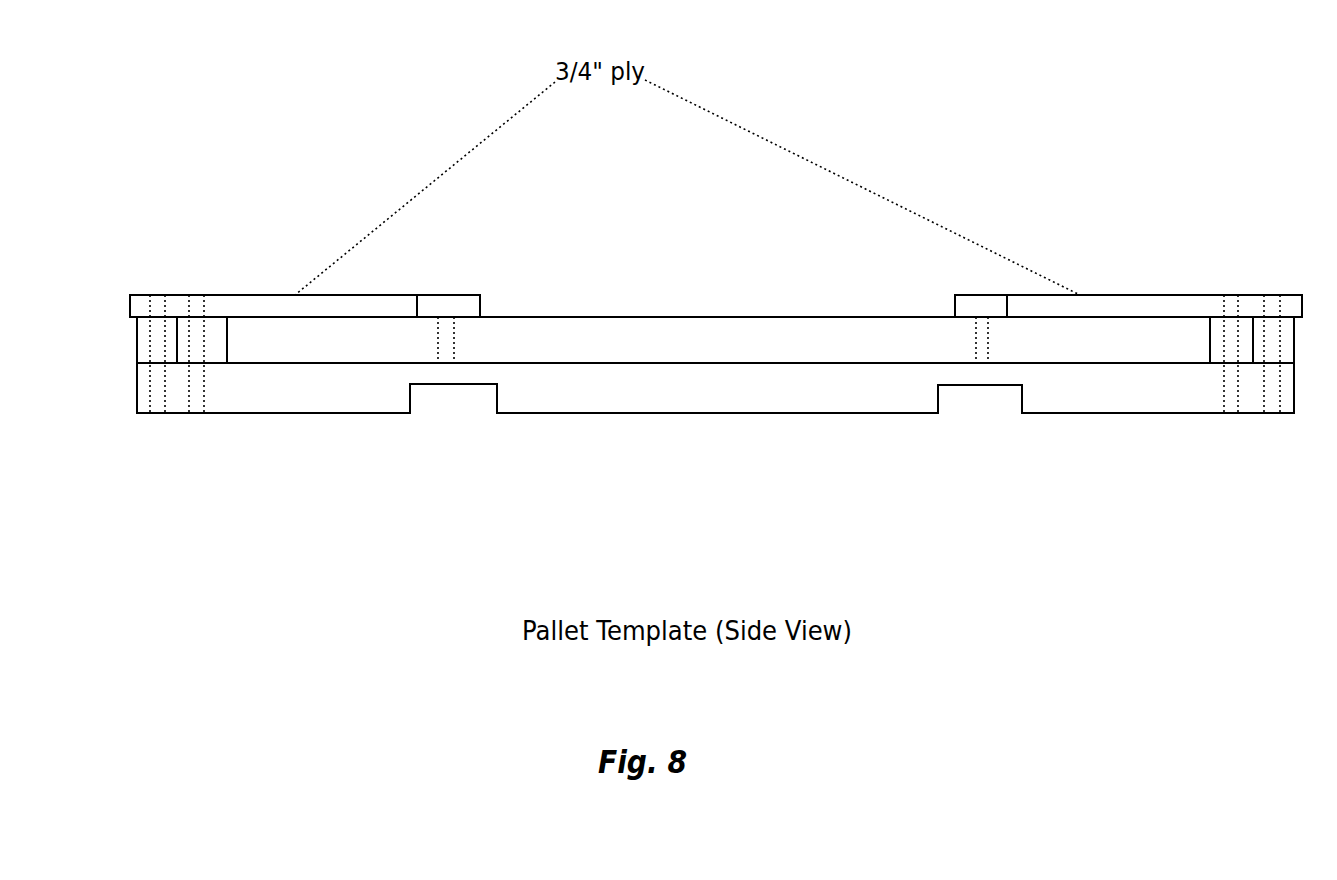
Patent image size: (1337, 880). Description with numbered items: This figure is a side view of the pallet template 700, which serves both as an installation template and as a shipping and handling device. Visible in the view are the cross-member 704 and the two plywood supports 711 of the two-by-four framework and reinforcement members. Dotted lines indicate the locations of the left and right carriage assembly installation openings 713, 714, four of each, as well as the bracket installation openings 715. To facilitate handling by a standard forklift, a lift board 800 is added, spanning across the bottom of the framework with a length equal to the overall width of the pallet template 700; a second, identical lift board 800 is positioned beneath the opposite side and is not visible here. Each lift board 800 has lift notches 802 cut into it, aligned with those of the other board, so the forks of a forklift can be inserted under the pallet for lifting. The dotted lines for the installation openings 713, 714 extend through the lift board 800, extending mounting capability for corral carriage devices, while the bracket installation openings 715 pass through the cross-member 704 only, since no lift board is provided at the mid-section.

The pallet template 700 is at (90, 334).
The cross-member 704 is at (635, 337).
The plywood supports 711 is at (1132, 295).
The left carriage assembly installation openings 713 is at (200, 295).
The right carriage assembly installation openings 714 is at (1275, 295).
The bracket installation openings 715 is at (455, 348).
The lift board 800 is at (295, 418).
The lift notches 802 is at (948, 516).